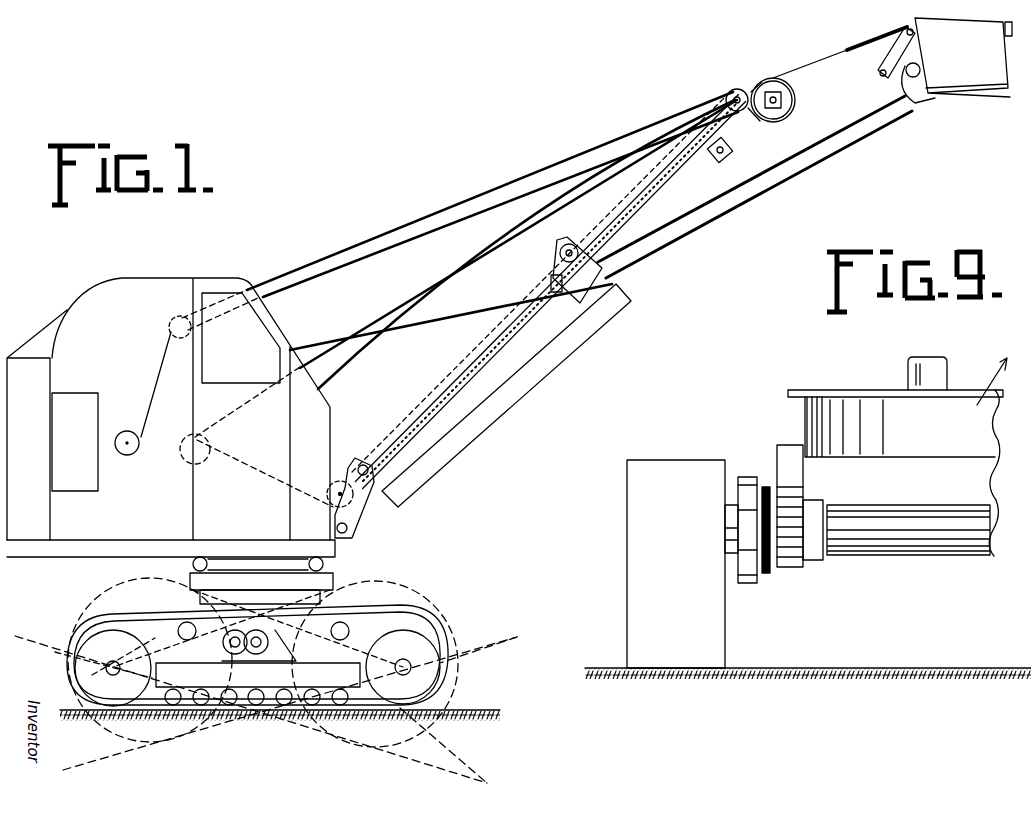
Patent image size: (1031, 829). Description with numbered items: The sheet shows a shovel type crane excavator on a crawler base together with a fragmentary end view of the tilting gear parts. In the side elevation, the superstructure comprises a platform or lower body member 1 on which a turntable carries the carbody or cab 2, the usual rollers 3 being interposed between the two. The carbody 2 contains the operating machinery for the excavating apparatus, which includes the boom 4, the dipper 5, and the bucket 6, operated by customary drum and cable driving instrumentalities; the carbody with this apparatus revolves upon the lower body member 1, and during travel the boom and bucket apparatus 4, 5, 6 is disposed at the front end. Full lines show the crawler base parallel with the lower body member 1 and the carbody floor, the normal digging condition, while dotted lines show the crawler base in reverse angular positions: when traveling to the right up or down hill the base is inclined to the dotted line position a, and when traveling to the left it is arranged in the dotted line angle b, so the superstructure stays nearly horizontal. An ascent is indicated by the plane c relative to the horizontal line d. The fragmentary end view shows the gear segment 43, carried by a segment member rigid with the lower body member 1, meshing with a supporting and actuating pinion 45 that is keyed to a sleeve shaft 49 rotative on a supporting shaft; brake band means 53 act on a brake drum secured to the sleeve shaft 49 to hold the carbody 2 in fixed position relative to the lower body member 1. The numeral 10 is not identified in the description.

In FIG. 1, the lower body member 1 is at (266, 663).
In FIG. 1, the carbody 2 is at (78, 548).
In FIG. 1, the rollers 3 is at (187, 567).
In FIG. 1, the boom 4 is at (566, 352).
In FIG. 1, the dipper 5 is at (798, 150).
In FIG. 1, the bucket 6 is at (972, 92).
In FIG. 1, the crawler truck 10 is at (70, 666).
In FIG. 9, the crawler truck 10 is at (700, 464).
In FIG. 1, the dotted line position a is at (440, 593).
In FIG. 1, the dotted line angle b is at (68, 617).
In FIG. 1, the plane c is at (515, 637).
In FIG. 1, the line d is at (460, 731).
In FIG. 9, the gear segment 43 is at (808, 489).
In FIG. 9, the supporting and actuating pinion 45 is at (790, 567).
In FIG. 9, the sleeve shaft 49 is at (914, 557).
In FIG. 9, the brake band means 53 is at (752, 476).